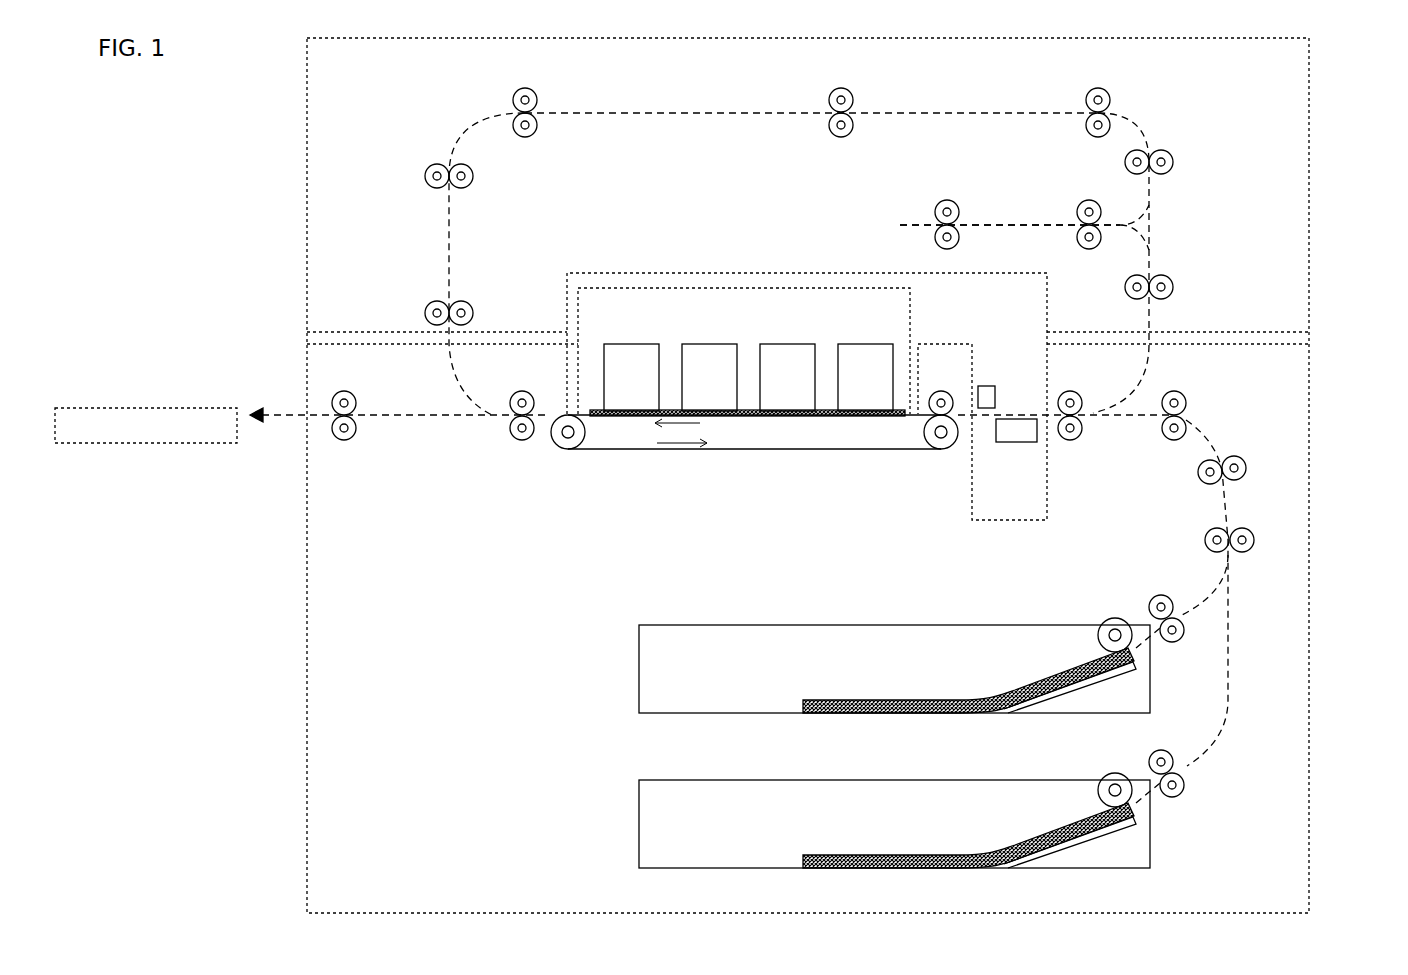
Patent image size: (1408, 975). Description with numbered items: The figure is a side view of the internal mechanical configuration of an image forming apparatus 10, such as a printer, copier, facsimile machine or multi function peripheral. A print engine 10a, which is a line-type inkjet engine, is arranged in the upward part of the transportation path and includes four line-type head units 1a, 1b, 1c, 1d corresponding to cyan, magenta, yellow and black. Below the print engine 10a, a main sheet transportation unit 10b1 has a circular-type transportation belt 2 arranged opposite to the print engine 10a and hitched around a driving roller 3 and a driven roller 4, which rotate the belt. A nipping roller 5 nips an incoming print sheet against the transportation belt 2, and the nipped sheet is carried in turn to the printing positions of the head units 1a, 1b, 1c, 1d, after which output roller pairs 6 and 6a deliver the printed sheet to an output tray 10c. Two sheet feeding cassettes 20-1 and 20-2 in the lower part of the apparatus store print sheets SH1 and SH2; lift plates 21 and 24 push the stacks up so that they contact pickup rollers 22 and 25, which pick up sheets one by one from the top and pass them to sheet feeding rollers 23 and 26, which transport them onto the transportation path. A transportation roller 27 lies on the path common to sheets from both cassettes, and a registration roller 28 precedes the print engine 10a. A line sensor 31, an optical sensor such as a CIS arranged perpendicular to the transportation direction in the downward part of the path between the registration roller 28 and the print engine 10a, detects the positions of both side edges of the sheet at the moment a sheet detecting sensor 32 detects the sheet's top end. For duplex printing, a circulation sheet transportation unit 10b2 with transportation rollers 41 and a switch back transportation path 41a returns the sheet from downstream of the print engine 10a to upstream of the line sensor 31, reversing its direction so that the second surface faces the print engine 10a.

The image forming apparatus 10 is at (1336, 108).
The print engine 10a is at (918, 322).
The main sheet transportation unit 10b1 is at (851, 361).
The circulation sheet transportation unit 10b2 is at (1313, 286).
The output tray 10c is at (200, 406).
The line-type head unit 1a is at (872, 344).
The line-type head unit 1b is at (794, 344).
The line-type head unit 1c is at (717, 344).
The line-type head unit 1d is at (640, 344).
The transportation belt 2 is at (782, 451).
The driving roller 3 is at (556, 446).
The driven roller 4 is at (948, 446).
The nipping roller 5 is at (946, 394).
The output roller pair 6 is at (518, 391).
The output roller pair 6a is at (346, 391).
The sheet feeding cassette 20-1 is at (639, 642).
The sheet feeding cassette 20-2 is at (639, 797).
The print sheets SH1 is at (812, 698).
The print sheets SH2 is at (812, 853).
The lift plate 21 is at (1012, 712).
The pickup roller 22 is at (1100, 626).
The sheet feeding roller 23 is at (1150, 600).
The lift plate 24 is at (1012, 867).
The pickup roller 25 is at (1100, 782).
The sheet feeding roller 26 is at (1150, 758).
The transportation roller 27 is at (1178, 391).
The registration roller 28 is at (1072, 391).
The line sensor 31 is at (1012, 443).
The sheet detecting sensor 32 is at (988, 386).
The transportation roller 41 is at (526, 88).
The switch back transportation path 41a is at (1009, 223).